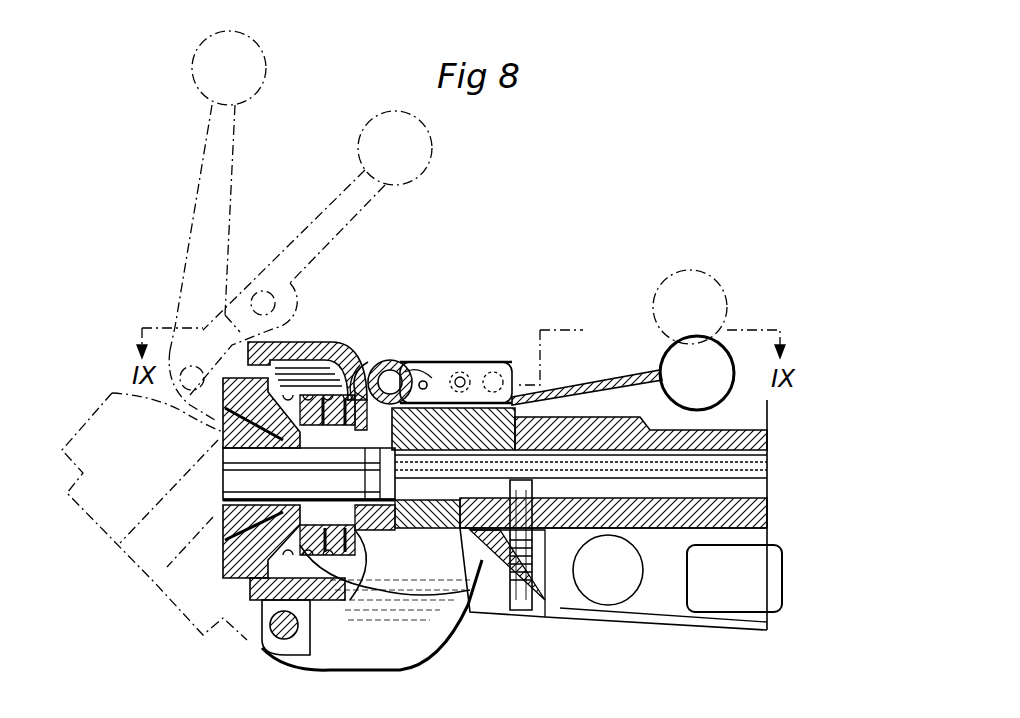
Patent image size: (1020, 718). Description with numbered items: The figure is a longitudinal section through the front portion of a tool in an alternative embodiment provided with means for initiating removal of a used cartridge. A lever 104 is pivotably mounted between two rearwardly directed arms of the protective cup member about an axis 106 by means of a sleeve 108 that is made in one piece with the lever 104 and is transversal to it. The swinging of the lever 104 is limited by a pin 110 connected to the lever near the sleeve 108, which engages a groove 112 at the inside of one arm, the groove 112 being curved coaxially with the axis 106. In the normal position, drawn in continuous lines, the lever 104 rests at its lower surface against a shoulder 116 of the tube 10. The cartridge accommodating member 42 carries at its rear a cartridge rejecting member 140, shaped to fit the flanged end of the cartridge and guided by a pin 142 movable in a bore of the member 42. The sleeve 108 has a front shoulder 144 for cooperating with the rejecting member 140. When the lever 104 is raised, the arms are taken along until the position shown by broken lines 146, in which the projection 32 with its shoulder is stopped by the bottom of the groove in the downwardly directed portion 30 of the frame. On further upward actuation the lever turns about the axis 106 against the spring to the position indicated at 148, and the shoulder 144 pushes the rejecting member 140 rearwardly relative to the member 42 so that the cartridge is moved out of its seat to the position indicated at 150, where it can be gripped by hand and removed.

The tube 10 is at (670, 440).
The downwardly directed portion of the frame 30 is at (383, 630).
The projection 32 is at (268, 643).
The cartridge accommodating member 42 is at (400, 590).
The lever 104 is at (612, 375).
The axis 106 is at (423, 380).
The sleeve 108 is at (391, 370).
The pin 110 is at (500, 365).
The groove 112 is at (462, 375).
The shoulder 116 is at (508, 362).
The cartridge rejecting member 140 is at (362, 365).
The pin 142 is at (230, 480).
The front shoulder 144 is at (352, 355).
The broken-line position of lever and arms 146 is at (365, 215).
The broken-line position of lever 148 is at (208, 188).
The position of ejected cartridge 150 is at (120, 400).